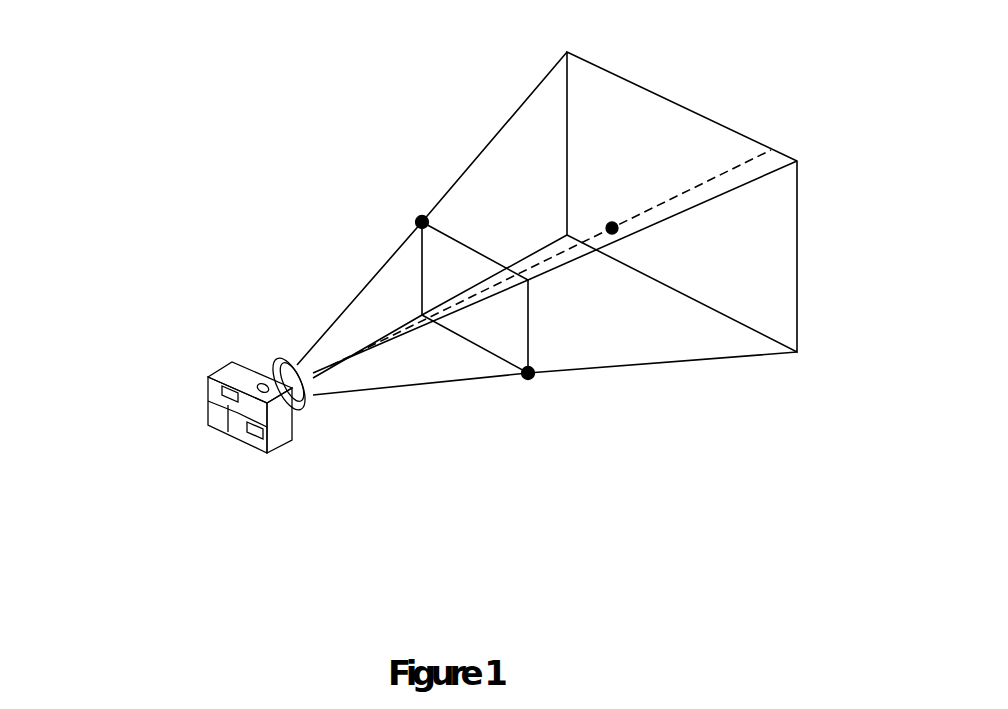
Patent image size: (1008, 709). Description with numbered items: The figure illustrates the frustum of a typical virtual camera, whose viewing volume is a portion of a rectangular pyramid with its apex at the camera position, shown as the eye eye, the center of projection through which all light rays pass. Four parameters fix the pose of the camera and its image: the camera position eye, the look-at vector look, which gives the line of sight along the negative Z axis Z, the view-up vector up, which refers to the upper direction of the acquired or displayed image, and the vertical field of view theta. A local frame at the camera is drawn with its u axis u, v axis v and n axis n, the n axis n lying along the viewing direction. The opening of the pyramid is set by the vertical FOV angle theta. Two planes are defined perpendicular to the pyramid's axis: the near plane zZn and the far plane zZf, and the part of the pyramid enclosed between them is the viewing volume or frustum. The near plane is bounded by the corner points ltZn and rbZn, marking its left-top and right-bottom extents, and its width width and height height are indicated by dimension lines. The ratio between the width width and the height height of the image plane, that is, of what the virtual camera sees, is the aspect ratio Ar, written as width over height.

The look-at vector look is at (605, 208).
The negative Z axis Z is at (771, 150).
The near-plane corner (l, t, −Zn) ltZn is at (422, 222).
The near-plane corner (r, b, −Zn) rbZn is at (528, 373).
The element width is at (543, 266).
The element height is at (547, 360).
The aspect ratio Ar is at (797, 352).
The near plane zZn is at (507, 390).
The far plane zZf is at (792, 360).
The view-up vector up is at (47, 192).
The camera v axis v is at (238, 413).
The camera u axis u is at (238, 413).
The camera n axis n is at (318, 376).
The vertical field of view theta is at (411, 338).
The camera position eye is at (260, 421).